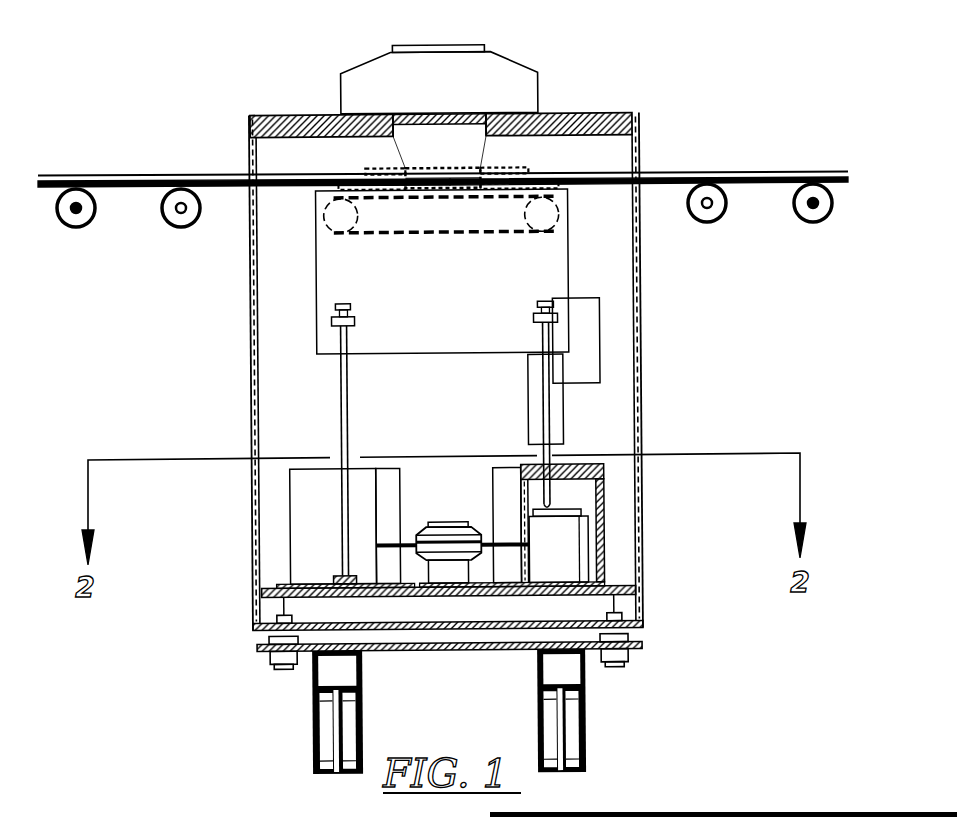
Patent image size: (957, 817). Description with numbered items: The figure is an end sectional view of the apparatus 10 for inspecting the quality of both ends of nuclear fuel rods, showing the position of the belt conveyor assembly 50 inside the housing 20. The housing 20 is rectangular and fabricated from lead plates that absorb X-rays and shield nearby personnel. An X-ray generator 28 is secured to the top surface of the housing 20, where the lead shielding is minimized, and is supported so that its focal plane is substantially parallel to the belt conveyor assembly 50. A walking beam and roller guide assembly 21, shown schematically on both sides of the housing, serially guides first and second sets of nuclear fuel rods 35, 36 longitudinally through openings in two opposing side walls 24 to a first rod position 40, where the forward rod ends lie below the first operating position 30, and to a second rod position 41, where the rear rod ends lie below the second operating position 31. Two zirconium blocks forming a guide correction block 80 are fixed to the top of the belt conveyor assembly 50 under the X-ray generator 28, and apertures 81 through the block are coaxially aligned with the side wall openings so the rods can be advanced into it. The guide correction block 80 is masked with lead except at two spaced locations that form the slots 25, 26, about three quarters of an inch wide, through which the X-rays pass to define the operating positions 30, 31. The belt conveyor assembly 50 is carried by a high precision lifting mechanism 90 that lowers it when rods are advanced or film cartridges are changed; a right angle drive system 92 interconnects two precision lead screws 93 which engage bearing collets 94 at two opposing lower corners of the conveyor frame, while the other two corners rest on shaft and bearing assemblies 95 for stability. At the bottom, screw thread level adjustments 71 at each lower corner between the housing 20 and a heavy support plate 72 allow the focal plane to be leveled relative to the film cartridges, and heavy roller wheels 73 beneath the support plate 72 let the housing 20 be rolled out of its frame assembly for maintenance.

The apparatus 10 is at (256, 108).
The housing 20 is at (240, 328).
The walking beam and roller guide assembly 21 is at (177, 226).
The side walls 24 is at (250, 288).
The slot 25 is at (527, 168).
The slot 26 is at (397, 172).
The X-ray generator 28 is at (520, 62).
The first operating position 30 is at (500, 150).
The second operating position 31 is at (395, 152).
The first set of nuclear fuel rods 35 is at (720, 173).
The second set of nuclear fuel rods 36 is at (173, 176).
The first rod position 40 is at (498, 197).
The second rod position 41 is at (400, 197).
The belt conveyor assembly 50 is at (580, 271).
The screw thread level adjustments 71 is at (281, 667).
The support plate 72 is at (640, 647).
The roller wheels 73 is at (580, 737).
The guide correction block 80 is at (530, 168).
The apertures 81 is at (468, 166).
The lifting mechanism 90 is at (280, 563).
The right angle drive system 92 is at (457, 527).
The lead screws 93 is at (567, 447).
The bearing collets 94 is at (588, 332).
The shaft and bearing assemblies 95 is at (350, 433).